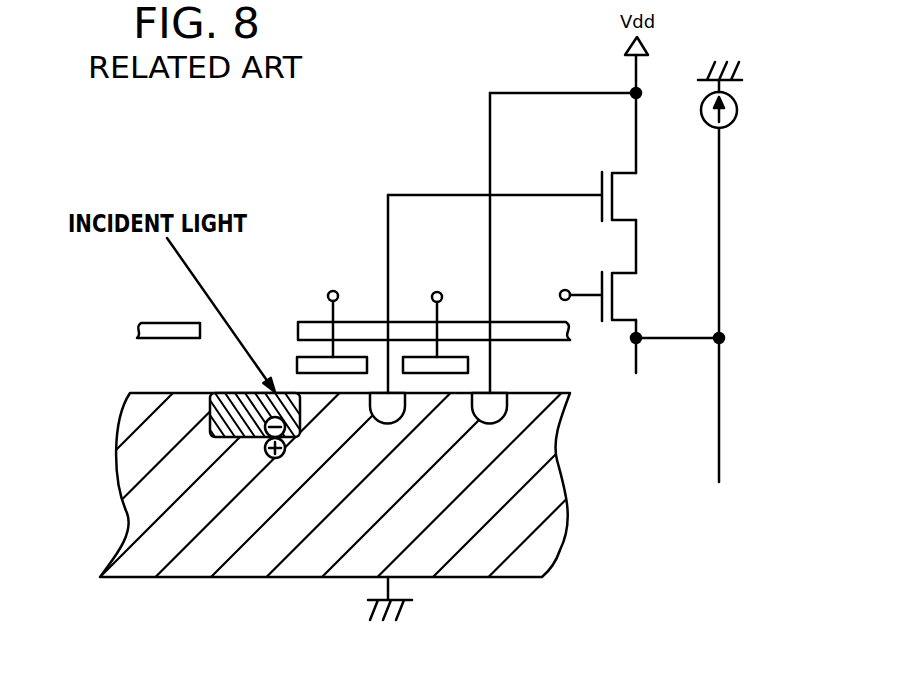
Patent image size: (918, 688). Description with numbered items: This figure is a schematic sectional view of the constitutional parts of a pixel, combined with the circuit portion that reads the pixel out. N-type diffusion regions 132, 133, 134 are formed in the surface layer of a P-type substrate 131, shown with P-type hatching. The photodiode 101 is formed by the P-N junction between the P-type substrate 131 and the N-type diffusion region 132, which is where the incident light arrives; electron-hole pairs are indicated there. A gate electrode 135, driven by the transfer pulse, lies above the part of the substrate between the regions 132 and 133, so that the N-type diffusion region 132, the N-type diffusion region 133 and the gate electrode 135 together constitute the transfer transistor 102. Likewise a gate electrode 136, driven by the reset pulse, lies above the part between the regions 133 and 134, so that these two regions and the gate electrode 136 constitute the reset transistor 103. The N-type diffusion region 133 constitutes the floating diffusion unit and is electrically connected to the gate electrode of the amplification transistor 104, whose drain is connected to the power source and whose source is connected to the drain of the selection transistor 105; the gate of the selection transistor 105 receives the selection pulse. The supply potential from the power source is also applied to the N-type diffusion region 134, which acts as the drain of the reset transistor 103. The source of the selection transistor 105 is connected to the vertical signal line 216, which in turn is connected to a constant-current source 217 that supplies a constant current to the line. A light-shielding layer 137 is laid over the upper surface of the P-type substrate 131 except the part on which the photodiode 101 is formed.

The photodiode 101 is at (287, 466).
The transfer transistor 102 is at (337, 428).
The reset transistor 103 is at (437, 428).
The amplification transistor 104 is at (627, 195).
The selection transistor 105 is at (627, 295).
The P-type substrate 131 is at (462, 572).
The N-type diffusion region 132 is at (237, 437).
The N-type diffusion region 133 is at (390, 427).
The N-type diffusion region 134 is at (492, 427).
The gate electrode 135 is at (303, 357).
The gate electrode 136 is at (470, 365).
The light-shielding layer 137 is at (168, 323).
The vertical signal line 216 is at (721, 365).
The constant-current source 217 is at (738, 110).